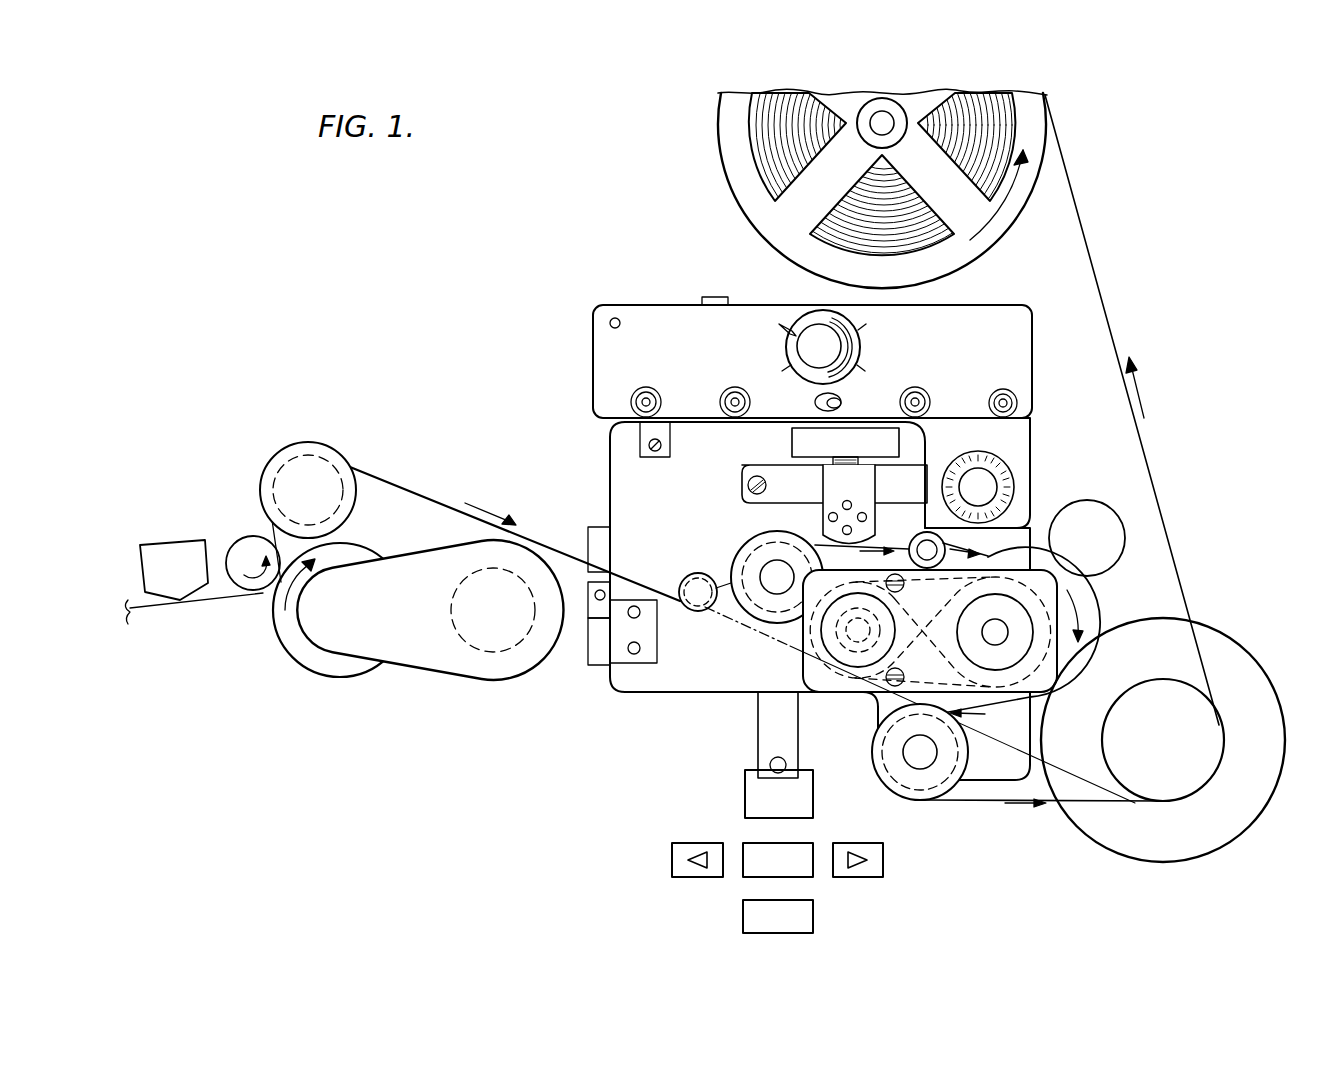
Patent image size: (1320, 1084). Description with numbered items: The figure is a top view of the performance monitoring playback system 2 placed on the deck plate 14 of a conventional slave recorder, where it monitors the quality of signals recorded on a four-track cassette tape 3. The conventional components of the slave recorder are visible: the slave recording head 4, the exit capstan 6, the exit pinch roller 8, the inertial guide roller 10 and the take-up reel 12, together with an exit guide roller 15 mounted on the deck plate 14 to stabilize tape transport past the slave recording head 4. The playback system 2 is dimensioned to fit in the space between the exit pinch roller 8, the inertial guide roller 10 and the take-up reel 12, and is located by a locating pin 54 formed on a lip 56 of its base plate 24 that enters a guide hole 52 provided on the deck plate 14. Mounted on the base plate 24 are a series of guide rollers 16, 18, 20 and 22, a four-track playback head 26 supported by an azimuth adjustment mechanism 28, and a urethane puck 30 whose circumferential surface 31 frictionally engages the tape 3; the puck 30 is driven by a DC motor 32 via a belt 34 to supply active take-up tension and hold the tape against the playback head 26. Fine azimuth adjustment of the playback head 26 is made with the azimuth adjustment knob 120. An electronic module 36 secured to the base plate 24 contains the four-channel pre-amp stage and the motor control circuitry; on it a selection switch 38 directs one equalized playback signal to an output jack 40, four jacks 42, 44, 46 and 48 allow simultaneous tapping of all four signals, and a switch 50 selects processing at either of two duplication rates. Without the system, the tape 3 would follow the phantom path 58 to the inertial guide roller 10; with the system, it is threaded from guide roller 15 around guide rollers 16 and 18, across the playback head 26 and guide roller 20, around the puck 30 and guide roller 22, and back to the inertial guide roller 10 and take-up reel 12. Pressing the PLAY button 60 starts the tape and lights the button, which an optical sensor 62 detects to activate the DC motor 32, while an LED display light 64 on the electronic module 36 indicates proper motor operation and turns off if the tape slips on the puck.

The playback system 2 is at (496, 380).
The four-track cassette tape 3 is at (408, 492).
The slave recording head 4 is at (162, 552).
The exit capstan 6 is at (248, 548).
The exit pinch roller 8 is at (430, 655).
The inertial guide roller 10 is at (1227, 830).
The take-up reel 12 is at (718, 145).
The deck plate 14 is at (357, 736).
The exit guide roller 15 is at (307, 466).
The guide roller 16 is at (697, 575).
The guide roller 18 is at (738, 556).
The guide roller 20 is at (917, 535).
The guide roller 22 is at (932, 793).
The base plate 24 is at (705, 653).
The playback head 26 is at (824, 532).
The azimuth adjustment mechanism 28 is at (788, 463).
The urethane puck 30 is at (1066, 617).
The circumferential surface 31 is at (1065, 596).
The DC motor 32 is at (842, 652).
The belt 34 is at (880, 712).
The electronic module 36 is at (648, 315).
The selection switch 38 is at (847, 347).
The output jack 40 is at (718, 297).
The jack 42 is at (655, 393).
The jack 44 is at (727, 391).
The jack 46 is at (923, 402).
The jack 48 is at (1003, 393).
The switch 50 is at (836, 395).
The guide hole 52 is at (598, 612).
The locating pin 54 is at (586, 557).
The lip 56 is at (603, 658).
The tape path 58 is at (757, 632).
The PLAY button 60 is at (745, 797).
The optical sensor 62 is at (770, 764).
The LED display light 64 is at (609, 325).
The azimuth adjustment knob 120 is at (985, 485).